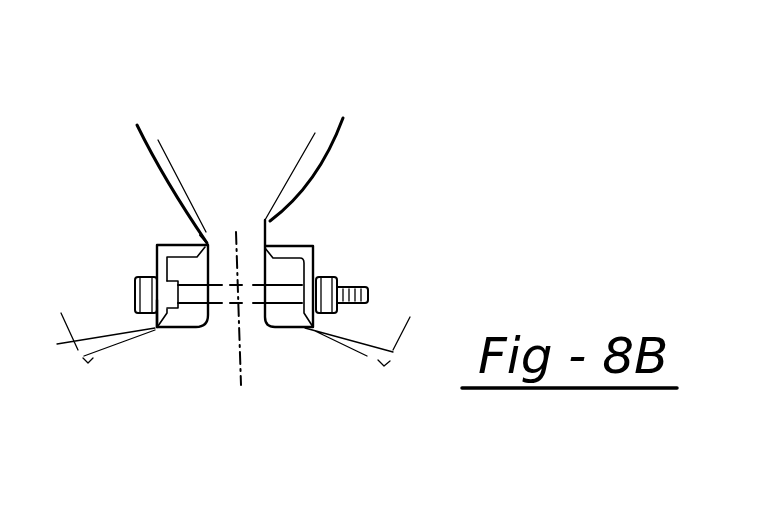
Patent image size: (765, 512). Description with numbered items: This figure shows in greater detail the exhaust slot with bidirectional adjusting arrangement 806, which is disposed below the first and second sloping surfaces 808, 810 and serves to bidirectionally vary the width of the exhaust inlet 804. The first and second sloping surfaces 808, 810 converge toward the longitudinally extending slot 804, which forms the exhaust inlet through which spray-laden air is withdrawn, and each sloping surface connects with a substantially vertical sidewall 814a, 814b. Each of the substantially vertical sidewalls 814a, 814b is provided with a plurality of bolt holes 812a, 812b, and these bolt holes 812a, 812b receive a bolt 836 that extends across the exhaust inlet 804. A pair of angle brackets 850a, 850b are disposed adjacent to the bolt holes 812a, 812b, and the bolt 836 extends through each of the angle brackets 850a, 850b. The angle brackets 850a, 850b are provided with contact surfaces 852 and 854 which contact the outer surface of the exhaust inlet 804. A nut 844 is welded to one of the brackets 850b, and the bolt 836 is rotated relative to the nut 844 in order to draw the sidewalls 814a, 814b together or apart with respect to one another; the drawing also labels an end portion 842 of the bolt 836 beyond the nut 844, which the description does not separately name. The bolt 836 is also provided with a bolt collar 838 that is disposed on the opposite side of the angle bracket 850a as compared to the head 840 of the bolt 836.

The longitudinally extending slot 804 is at (235, 188).
The exhaust slot with bidirectional adjusting arrangement 806 is at (410, 294).
The first sloping surface 808 is at (167, 158).
The second sloping surface 810 is at (298, 158).
The bolt holes 812a is at (160, 326).
The bolt holes 812b is at (270, 292).
The substantially vertical sidewall 814a is at (148, 167).
The substantially vertical sidewall 814b is at (344, 159).
The bolt 836 is at (253, 328).
The bolt collar 838 is at (183, 312).
The head of the bolt 840 is at (137, 279).
The threaded end 842 is at (358, 287).
The nut 844 is at (318, 278).
The angle bracket 850a is at (165, 244).
The angle bracket 850b is at (315, 232).
The contact surface 852 is at (198, 223).
The contact surface 854 is at (155, 328).